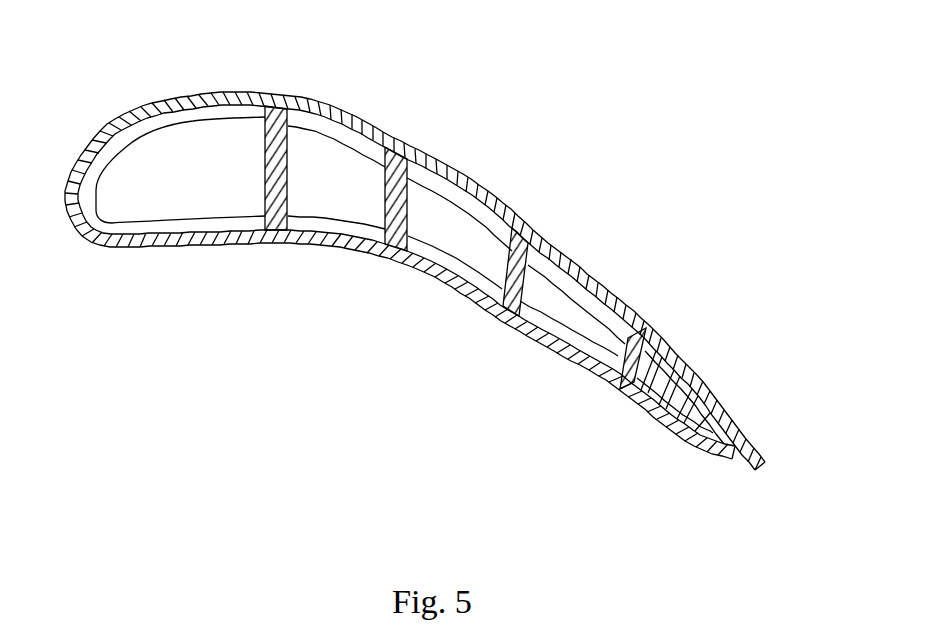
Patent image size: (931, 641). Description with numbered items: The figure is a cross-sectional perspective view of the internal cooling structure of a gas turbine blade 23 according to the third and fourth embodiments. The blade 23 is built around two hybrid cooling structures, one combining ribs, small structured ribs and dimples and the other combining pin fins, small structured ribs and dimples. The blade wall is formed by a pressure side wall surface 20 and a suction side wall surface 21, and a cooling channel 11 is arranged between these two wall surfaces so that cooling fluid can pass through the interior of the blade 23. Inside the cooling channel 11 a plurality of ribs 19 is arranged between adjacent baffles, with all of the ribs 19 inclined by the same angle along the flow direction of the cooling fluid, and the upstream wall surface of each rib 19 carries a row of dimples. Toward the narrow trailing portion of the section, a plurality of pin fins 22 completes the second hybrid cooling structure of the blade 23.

The cooling channel 11 is at (673, 358).
The ribs 19 is at (445, 173).
The pressure side wall surface 20 is at (654, 417).
The suction side wall surface 21 is at (676, 345).
The pin fins 22 is at (710, 413).
The gas turbine blade 23 is at (326, 89).